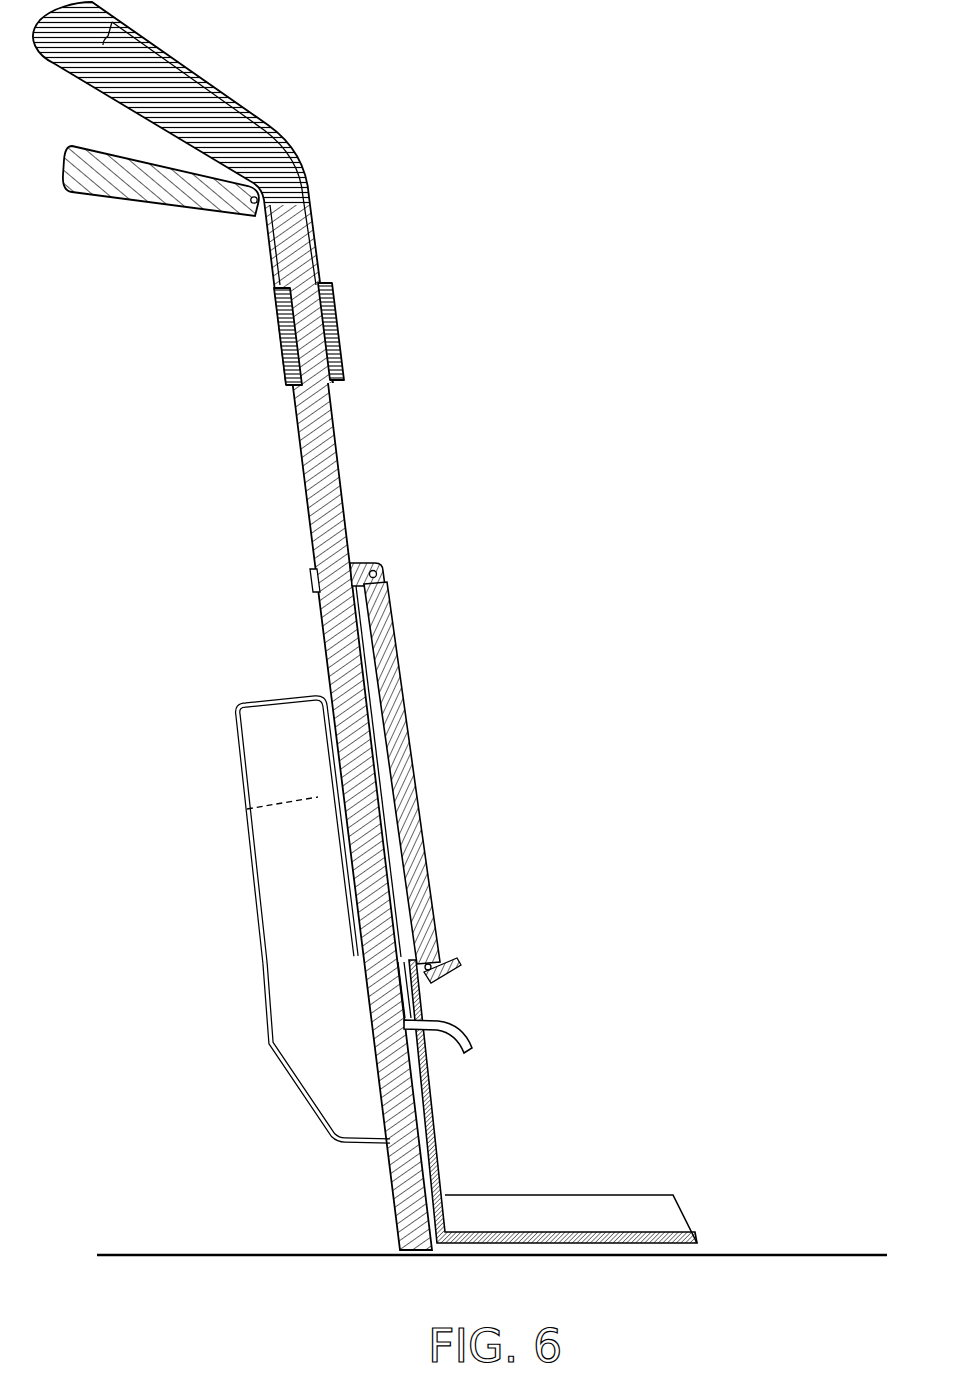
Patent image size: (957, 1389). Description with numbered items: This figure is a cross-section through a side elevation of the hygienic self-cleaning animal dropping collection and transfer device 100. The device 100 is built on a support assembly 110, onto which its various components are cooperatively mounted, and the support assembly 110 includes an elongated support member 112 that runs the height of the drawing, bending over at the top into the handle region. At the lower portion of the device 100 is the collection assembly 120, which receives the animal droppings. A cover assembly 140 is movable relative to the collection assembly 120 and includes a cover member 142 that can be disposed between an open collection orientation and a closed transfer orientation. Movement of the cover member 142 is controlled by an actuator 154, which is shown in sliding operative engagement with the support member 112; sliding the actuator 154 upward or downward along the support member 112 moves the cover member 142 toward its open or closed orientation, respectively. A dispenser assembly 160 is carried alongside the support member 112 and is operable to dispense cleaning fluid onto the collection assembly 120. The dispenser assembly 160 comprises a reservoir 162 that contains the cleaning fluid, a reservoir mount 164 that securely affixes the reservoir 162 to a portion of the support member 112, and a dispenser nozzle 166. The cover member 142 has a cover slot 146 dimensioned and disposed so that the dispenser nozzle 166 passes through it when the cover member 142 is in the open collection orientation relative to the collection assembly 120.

The hygienic self-cleaning animal dropping collection and transfer device 100 is at (512, 368).
The support assembly 110 is at (253, 432).
The support member 112 is at (322, 656).
The collection assembly 120 is at (708, 1194).
The cover assembly 140 is at (492, 1094).
The cover member 142 is at (452, 1162).
The cover slot 146 is at (441, 980).
The actuator 154 is at (310, 582).
The dispenser assembly 160 is at (224, 866).
The reservoir 162 is at (268, 1010).
The reservoir mount 164 is at (388, 1145).
The dispenser nozzle 166 is at (470, 1045).